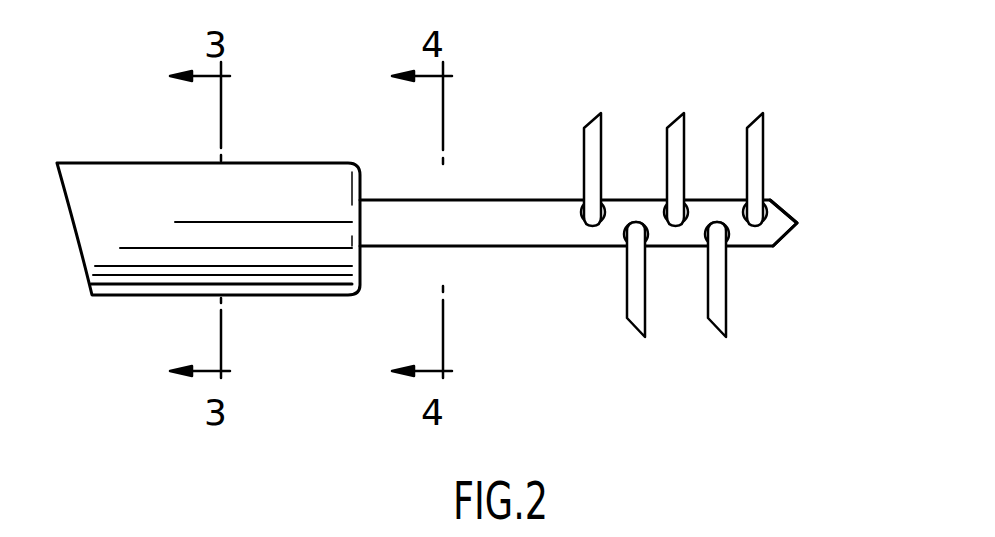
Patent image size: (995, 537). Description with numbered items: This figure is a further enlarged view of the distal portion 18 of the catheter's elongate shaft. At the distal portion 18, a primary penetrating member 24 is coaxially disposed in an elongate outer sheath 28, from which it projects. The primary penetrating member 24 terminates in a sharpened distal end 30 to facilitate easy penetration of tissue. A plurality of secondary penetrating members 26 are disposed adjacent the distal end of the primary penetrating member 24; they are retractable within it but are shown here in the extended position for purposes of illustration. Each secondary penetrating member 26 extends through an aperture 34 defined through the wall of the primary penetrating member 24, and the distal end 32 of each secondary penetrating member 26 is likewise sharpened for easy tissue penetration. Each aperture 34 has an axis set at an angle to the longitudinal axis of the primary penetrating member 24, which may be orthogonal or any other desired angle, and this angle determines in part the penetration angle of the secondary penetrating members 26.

The distal portion 18 is at (363, 23).
The primary penetrating member 24 is at (538, 199).
The secondary penetrating members 26 is at (592, 118).
The elongate outer sheath 28 is at (293, 162).
The sharpened distal end 30 is at (778, 246).
The distal end 32 is at (757, 118).
The apertures 34 is at (622, 238).